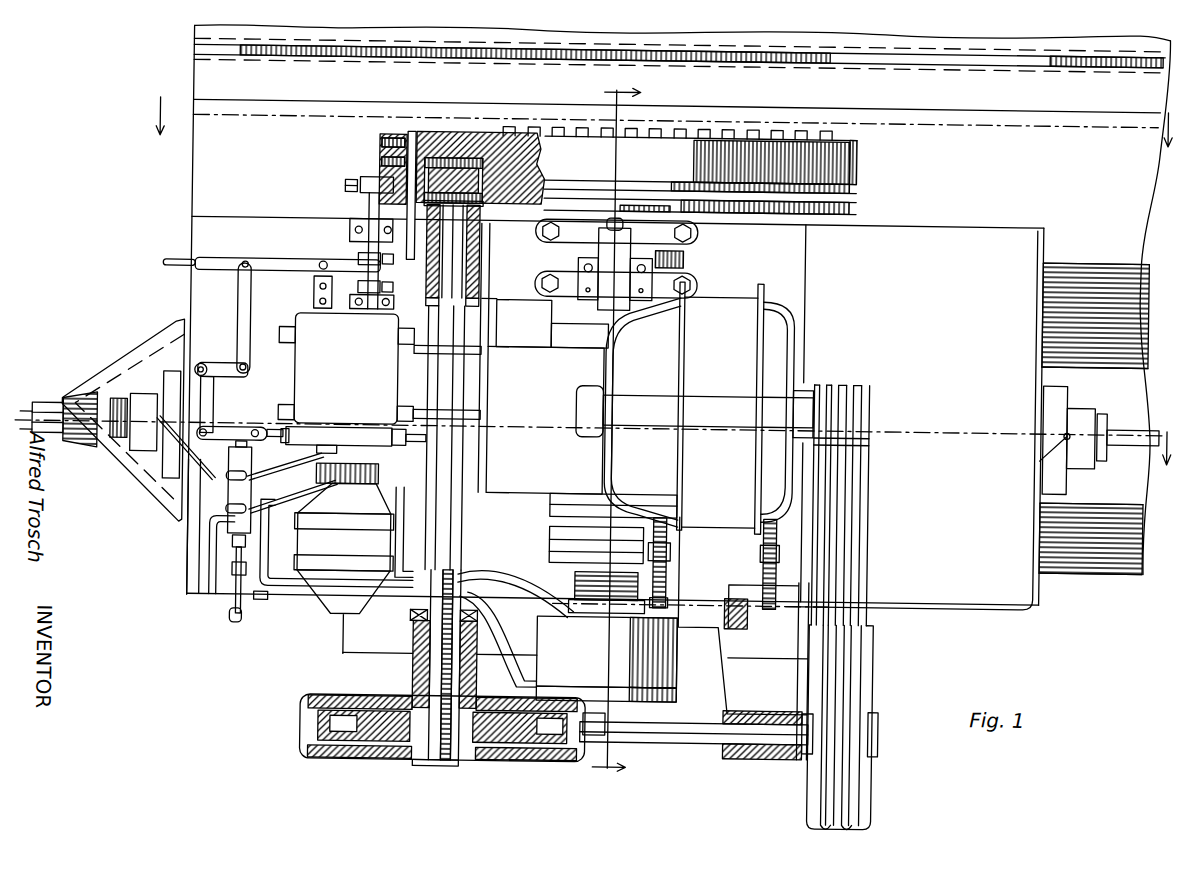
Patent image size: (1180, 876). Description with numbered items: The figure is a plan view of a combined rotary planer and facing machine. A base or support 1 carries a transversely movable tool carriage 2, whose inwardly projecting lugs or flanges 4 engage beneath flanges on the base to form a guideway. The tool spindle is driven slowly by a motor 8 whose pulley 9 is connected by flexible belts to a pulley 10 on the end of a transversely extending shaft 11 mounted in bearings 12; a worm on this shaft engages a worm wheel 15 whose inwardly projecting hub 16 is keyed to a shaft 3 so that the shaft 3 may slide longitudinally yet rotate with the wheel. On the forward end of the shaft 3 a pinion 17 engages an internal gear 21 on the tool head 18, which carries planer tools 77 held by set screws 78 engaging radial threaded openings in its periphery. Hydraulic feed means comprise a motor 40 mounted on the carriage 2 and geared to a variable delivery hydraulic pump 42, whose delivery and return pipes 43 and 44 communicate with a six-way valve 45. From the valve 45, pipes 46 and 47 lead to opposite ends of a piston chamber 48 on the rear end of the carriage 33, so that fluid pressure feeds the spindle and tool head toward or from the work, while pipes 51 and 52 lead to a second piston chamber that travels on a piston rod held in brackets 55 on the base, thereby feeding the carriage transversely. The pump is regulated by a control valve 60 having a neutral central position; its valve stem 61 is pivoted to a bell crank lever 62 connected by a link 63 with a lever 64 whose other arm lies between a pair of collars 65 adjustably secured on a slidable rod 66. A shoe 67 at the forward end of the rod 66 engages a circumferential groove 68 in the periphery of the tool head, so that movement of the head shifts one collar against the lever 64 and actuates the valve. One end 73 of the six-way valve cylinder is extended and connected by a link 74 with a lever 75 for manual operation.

The base 1 is at (194, 164).
The tool carriage 2 is at (177, 602).
The shaft 3 is at (471, 476).
The lugs or flanges 4 is at (884, 435).
The motor 8 is at (695, 408).
The pulley 9 is at (885, 396).
The pulley 10 is at (868, 679).
The shaft 11 is at (687, 741).
The bearings 12 is at (762, 753).
The worm wheel 15 is at (552, 743).
The hub 16 is at (418, 681).
The pinion 17 is at (482, 209).
The tool head 18 is at (854, 154).
The internal gear 21 is at (451, 167).
The carriage 33 is at (704, 629).
The motor 40 is at (343, 568).
The variable delivery hydraulic pump 42 is at (380, 369).
The delivery pipe 43 is at (305, 470).
The return pipe 44 is at (298, 504).
The six-way valve 45 is at (230, 472).
The pipe 46 is at (272, 582).
The pipe 47 is at (403, 515).
The piston chamber 48 is at (606, 659).
The pipe 51 is at (161, 499).
The pipe 52 is at (211, 556).
The brackets 55 is at (101, 479).
The control valve 60 is at (362, 437).
The valve stem 61 is at (270, 432).
The bell crank lever 62 is at (211, 373).
The link 63 is at (245, 318).
The lever 64 is at (273, 270).
The collars 65 is at (356, 260).
The slidable rod 66 is at (365, 209).
The shoe 67 is at (360, 183).
The circumferential groove 68 is at (855, 189).
The extended end of valve cylinder 73 is at (229, 562).
The link 74 is at (265, 605).
The lever 75 is at (241, 632).
The planer tools 77 is at (406, 133).
The set screws 78 is at (376, 151).